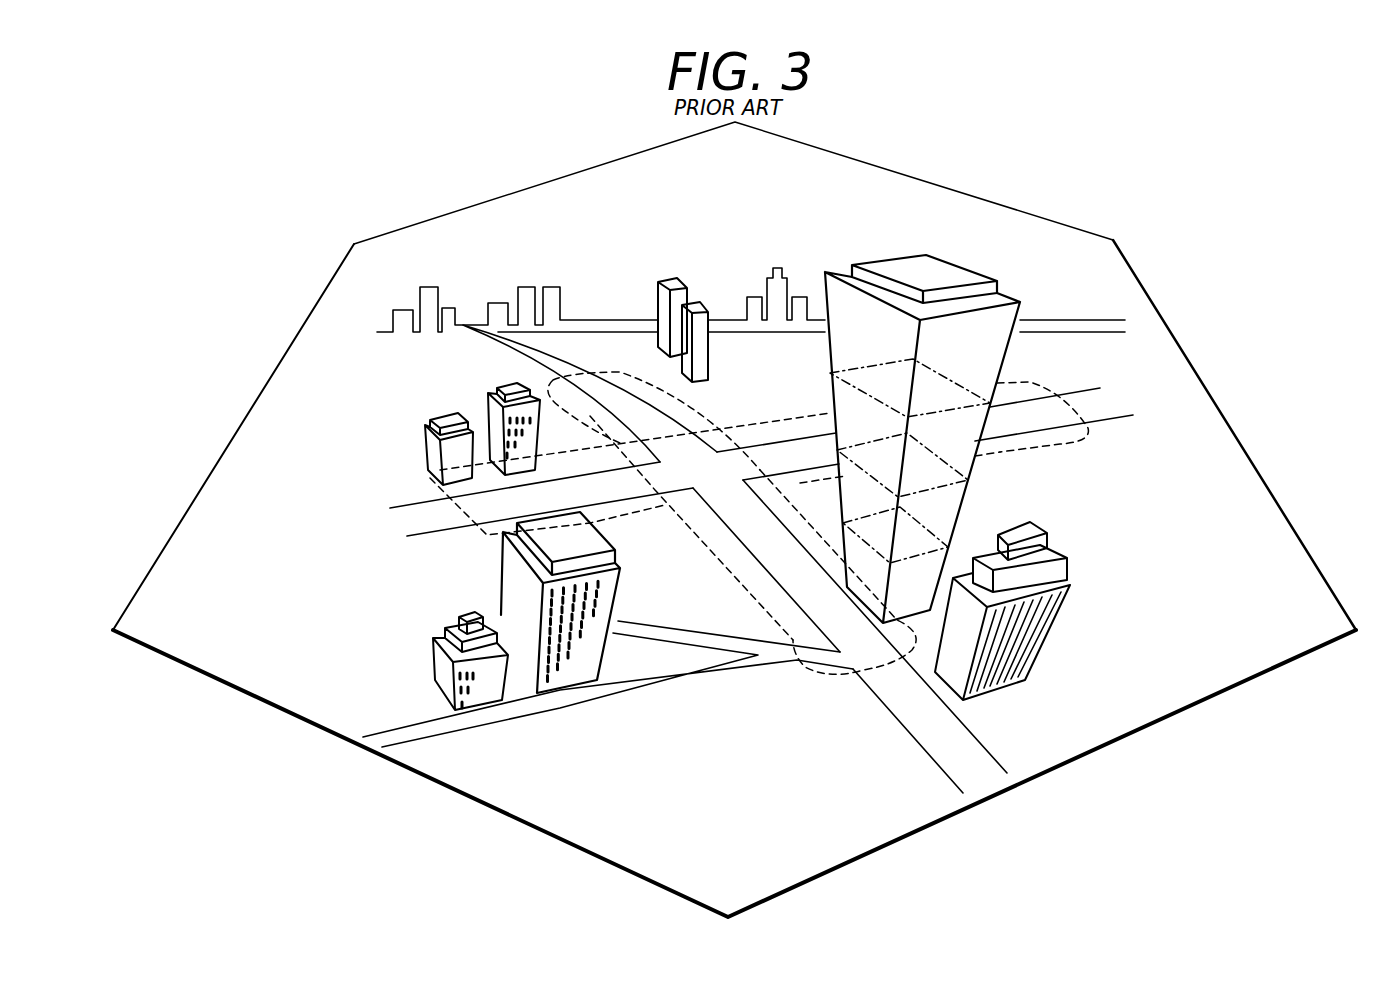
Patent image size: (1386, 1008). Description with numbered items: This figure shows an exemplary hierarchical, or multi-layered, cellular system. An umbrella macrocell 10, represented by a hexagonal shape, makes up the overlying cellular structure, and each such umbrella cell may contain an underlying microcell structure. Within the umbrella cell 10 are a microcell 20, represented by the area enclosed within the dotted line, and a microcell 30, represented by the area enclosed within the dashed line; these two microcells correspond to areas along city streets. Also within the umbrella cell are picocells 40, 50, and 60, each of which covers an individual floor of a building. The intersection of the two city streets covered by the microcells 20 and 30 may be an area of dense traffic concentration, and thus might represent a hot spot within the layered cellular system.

The umbrella macrocell 10 is at (445, 786).
The microcell 20 is at (617, 372).
The microcell 30 is at (488, 535).
The picocell 40 is at (972, 393).
The picocell 50 is at (963, 472).
The picocell 60 is at (890, 567).